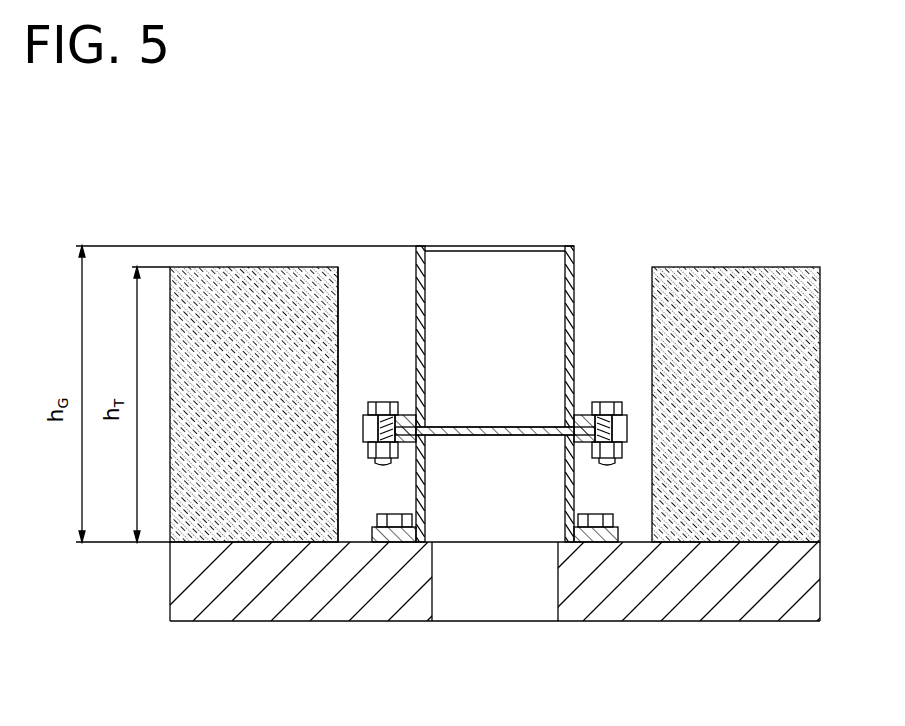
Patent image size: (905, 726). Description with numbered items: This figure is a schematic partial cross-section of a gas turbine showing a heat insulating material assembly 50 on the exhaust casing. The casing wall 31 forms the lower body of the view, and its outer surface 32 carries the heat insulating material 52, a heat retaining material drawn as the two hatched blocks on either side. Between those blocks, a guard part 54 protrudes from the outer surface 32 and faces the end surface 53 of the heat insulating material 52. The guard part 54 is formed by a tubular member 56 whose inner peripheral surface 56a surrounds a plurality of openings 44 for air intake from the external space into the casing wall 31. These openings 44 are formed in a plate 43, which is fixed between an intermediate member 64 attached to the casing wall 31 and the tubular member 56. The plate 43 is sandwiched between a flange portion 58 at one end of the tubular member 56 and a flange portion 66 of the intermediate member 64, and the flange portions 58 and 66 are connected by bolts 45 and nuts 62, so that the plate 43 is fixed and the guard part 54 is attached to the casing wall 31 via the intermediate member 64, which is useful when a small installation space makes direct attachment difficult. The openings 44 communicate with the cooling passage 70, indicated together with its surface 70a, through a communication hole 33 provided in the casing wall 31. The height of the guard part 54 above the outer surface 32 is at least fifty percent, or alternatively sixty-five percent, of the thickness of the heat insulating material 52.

The support structure 50 is at (682, 160).
The heat insulating material 52 is at (246, 267).
The end surface 53 is at (338, 300).
The guard part 54 is at (578, 224).
The tubular member 56 is at (576, 290).
The inner peripheral surface 56a is at (426, 290).
The flange portion 58 is at (590, 402).
The bolts 45 is at (385, 402).
The openings 44 is at (446, 426).
The plate 43 is at (499, 426).
The nuts 62 is at (400, 447).
The flange portion 66 is at (590, 440).
The intermediate member 64 is at (575, 491).
The outer surface 32 is at (352, 541).
The casing wall 31 is at (208, 621).
The communication hole 33 is at (433, 596).
The installation surface 70a is at (727, 687).
The cooling passage 70 is at (448, 614).